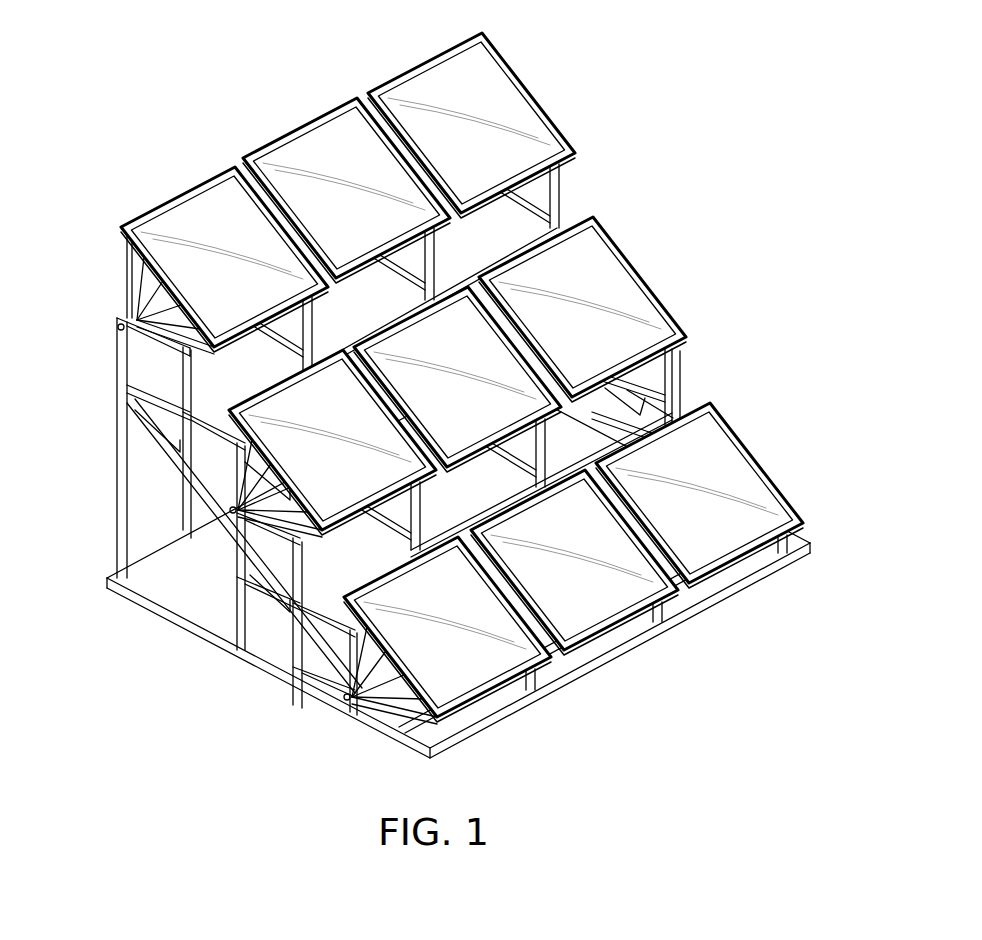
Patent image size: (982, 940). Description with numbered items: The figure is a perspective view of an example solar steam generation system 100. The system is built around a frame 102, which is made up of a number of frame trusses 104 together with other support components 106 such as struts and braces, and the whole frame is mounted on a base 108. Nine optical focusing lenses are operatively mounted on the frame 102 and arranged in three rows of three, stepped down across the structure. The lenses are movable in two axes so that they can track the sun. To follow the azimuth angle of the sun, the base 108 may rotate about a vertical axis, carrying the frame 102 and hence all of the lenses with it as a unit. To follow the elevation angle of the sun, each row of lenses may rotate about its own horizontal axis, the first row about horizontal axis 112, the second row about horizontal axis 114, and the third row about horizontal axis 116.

The solar steam generation system 100 is at (439, 383).
The frame 102 is at (434, 453).
The frame trusses 104 is at (677, 393).
The support components 106 is at (147, 308).
The base 108 is at (220, 652).
The horizontal axis 112 is at (58, 362).
The horizontal axis 114 is at (230, 512).
The horizontal axis 116 is at (340, 703).